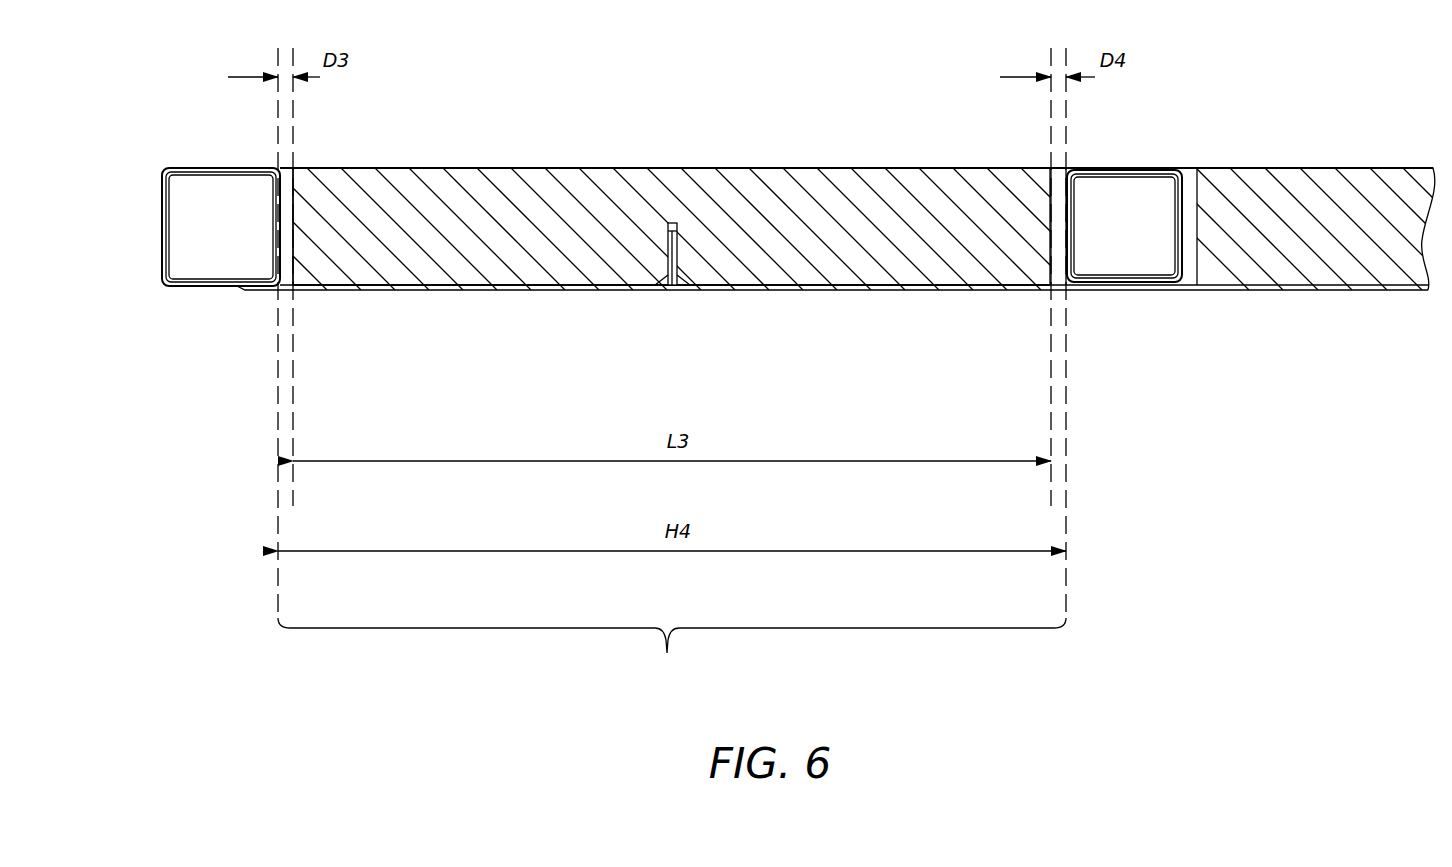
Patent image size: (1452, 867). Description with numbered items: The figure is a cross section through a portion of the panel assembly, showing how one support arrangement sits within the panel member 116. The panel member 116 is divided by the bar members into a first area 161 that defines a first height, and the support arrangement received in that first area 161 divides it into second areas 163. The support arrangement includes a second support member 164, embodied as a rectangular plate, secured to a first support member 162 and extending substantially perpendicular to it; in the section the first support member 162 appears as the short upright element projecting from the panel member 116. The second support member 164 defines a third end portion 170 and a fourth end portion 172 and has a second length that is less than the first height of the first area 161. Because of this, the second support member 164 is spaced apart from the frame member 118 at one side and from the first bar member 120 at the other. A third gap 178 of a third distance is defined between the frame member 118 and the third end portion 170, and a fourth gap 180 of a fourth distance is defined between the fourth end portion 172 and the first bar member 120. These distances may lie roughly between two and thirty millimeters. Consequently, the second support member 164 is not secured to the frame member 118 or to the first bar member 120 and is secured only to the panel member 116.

The panel member 116 is at (1322, 291).
The frame member 118 is at (160, 198).
The first bar member 120 is at (1125, 284).
The first area 161 is at (672, 651).
The first support member 162 is at (676, 262).
The second area 163 is at (598, 265).
The second support member 164 is at (485, 195).
The third end portion 170 is at (288, 232).
The fourth end portion 172 is at (1058, 258).
The third gap 178 is at (287, 192).
The fourth gap 180 is at (1055, 215).